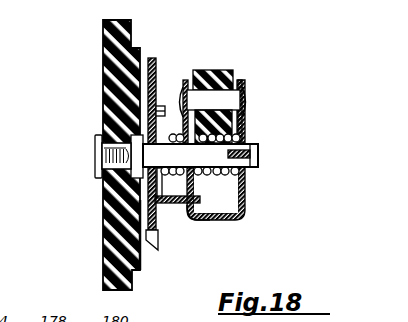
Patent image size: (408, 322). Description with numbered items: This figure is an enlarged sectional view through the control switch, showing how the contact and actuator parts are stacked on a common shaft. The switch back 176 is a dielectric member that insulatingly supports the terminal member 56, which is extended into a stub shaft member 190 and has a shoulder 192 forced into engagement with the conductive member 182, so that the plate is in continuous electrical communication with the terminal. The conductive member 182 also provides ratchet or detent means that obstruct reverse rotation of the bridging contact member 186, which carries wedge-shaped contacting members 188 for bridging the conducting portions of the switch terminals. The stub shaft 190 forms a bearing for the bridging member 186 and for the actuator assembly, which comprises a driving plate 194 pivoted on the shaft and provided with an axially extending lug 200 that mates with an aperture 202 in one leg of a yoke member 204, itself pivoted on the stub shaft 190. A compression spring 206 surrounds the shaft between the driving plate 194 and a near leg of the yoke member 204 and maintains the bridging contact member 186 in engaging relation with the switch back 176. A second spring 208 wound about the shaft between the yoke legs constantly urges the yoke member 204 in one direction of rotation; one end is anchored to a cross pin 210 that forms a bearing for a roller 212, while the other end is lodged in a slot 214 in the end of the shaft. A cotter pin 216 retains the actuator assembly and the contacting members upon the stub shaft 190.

The switch back 176 is at (103, 55).
The conductive member 182 is at (106, 210).
The bridging contact member 186 is at (153, 78).
The wedge-shaped contacting members 188 is at (149, 252).
The driving plate 194 is at (112, 115).
The shoulder 192 is at (103, 184).
The terminal member 56 is at (96, 158).
The slot 214 is at (250, 152).
The cotter pin 216 is at (260, 169).
The roller 212 is at (213, 73).
The cross pin 210 is at (213, 98).
The second spring 208 is at (242, 126).
The stub shaft member 190 is at (246, 133).
The yoke member 204 is at (246, 194).
The aperture 202 is at (190, 218).
The lug 200 is at (217, 194).
The compression spring 206 is at (177, 175).